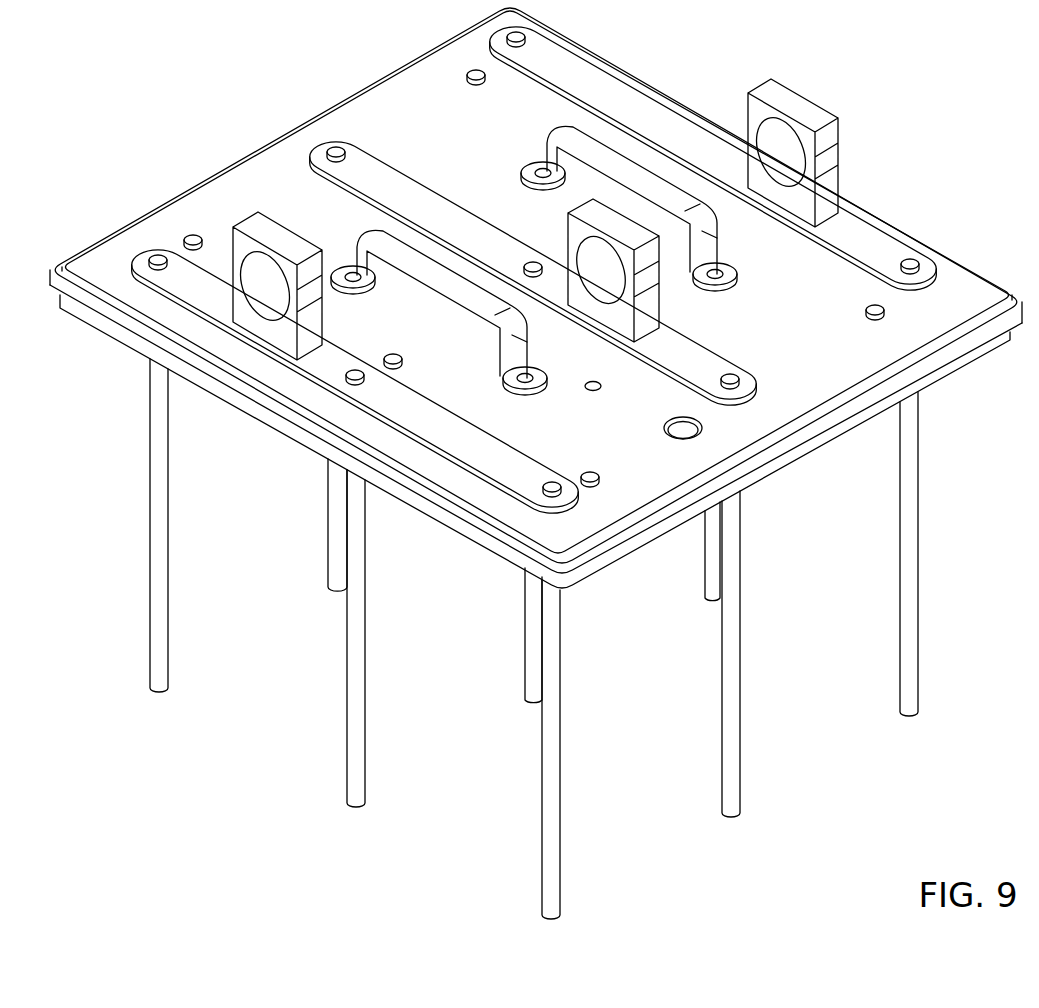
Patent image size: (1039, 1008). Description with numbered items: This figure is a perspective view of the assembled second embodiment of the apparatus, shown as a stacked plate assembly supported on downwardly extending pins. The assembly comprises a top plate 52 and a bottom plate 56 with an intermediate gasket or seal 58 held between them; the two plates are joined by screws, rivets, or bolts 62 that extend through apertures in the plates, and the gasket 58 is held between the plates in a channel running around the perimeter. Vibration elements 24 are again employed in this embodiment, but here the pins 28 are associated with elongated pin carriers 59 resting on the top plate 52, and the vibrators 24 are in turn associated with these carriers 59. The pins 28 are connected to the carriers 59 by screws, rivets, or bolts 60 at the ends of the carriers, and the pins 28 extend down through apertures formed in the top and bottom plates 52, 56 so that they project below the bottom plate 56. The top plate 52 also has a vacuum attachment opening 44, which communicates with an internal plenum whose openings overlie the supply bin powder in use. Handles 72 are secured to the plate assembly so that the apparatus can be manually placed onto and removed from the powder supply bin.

The vibration element 24 is at (840, 140).
The pin 28 is at (918, 493).
The vacuum attachment opening 44 is at (664, 426).
The top plate 52 is at (917, 358).
The bottom plate 56 is at (608, 572).
The intermediate gasket or seal 58 is at (985, 342).
The pin carrier 59 is at (625, 90).
The screws, rivets, or bolts 60 is at (510, 34).
The screws, rivets, or bolts 62 is at (476, 88).
The handle 72 is at (558, 130).